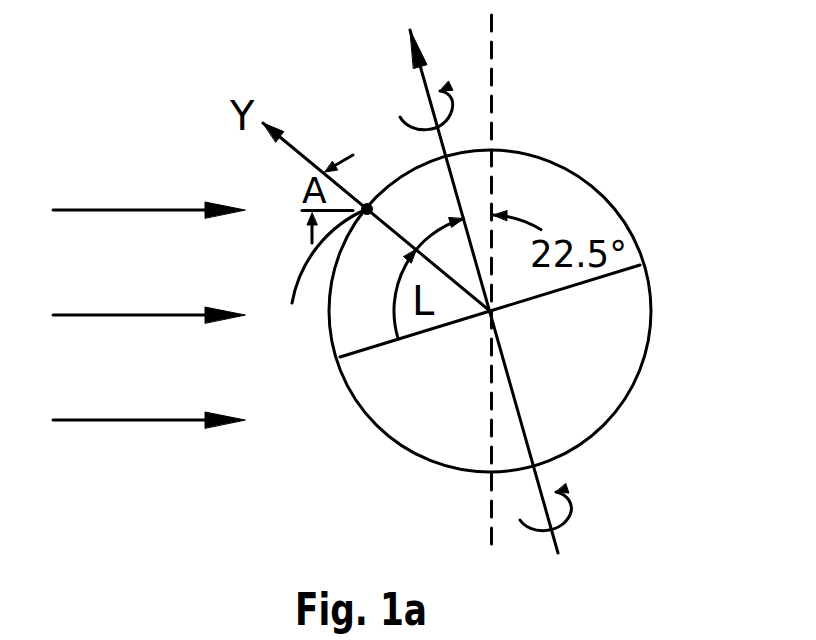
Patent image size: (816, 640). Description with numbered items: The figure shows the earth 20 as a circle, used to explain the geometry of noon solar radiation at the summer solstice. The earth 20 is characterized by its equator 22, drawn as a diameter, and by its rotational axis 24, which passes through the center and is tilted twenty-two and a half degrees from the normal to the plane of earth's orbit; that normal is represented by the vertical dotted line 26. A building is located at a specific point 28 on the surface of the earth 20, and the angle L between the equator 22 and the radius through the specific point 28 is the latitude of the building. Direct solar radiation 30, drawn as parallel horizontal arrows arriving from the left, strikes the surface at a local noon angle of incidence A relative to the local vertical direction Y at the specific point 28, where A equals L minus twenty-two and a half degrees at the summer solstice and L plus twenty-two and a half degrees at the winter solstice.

The earth 20 is at (641, 370).
The equator 22 is at (360, 352).
The rotational axis 24 is at (425, 82).
The dotted line 26 is at (492, 79).
The specific point 28 is at (320, 278).
The direct solar radiation 30 is at (118, 315).